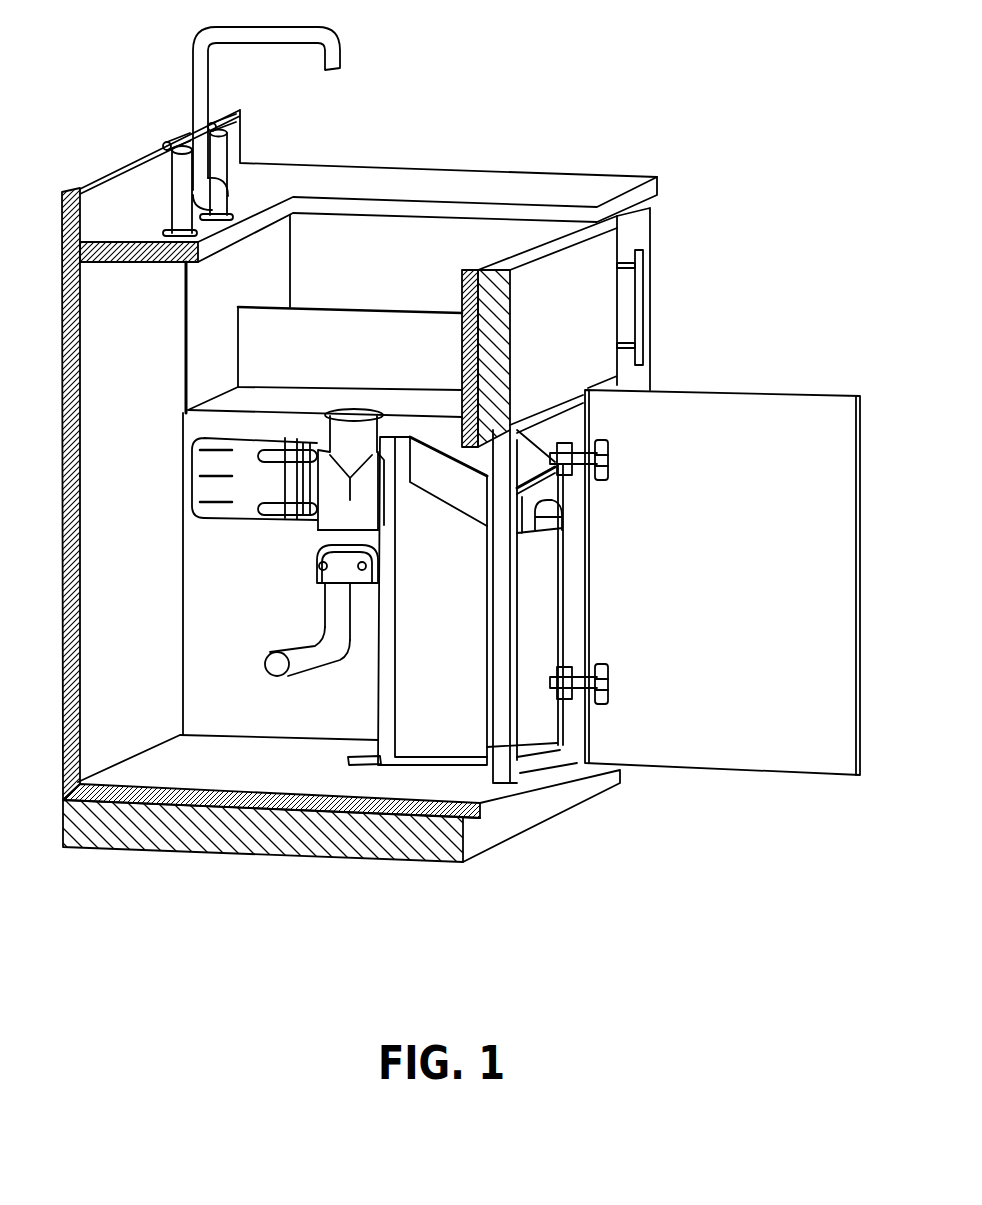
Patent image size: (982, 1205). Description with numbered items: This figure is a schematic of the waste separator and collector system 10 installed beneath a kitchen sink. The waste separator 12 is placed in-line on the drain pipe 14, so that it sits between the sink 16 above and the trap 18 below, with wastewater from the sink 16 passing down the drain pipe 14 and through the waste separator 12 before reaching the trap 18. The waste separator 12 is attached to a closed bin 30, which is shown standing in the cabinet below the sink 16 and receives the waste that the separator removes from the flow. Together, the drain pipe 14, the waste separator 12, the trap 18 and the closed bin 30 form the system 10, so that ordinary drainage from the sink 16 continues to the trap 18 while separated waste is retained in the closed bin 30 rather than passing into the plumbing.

The waste separator and collector system 10 is at (427, 407).
The waste separator 12 is at (267, 532).
The drain pipe 14 is at (333, 607).
The sink 16 is at (390, 240).
The trap 18 is at (338, 632).
The closed bin 30 is at (548, 490).